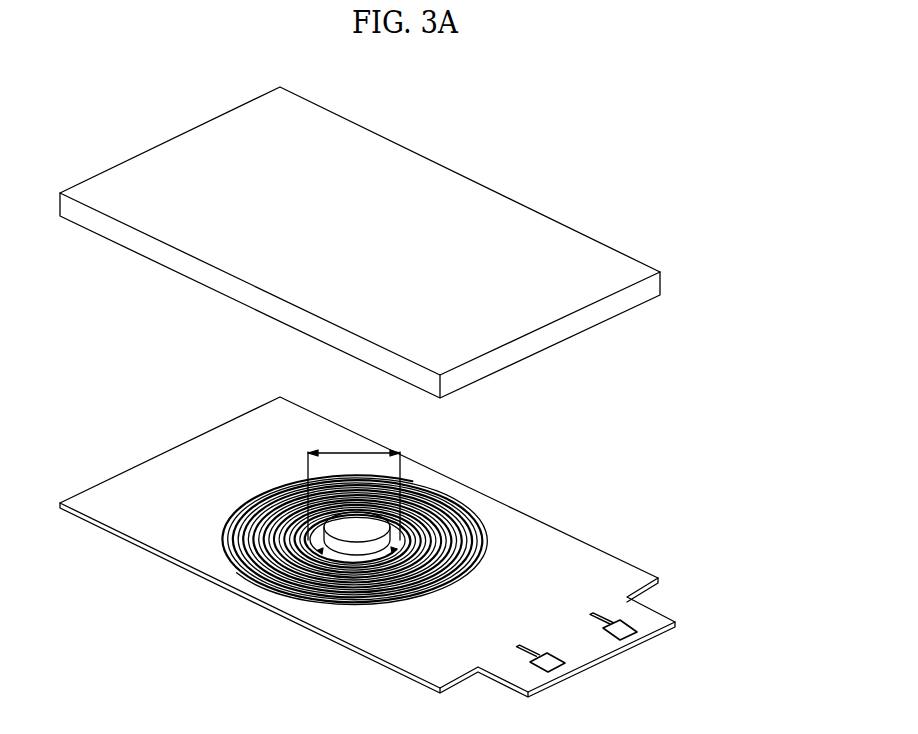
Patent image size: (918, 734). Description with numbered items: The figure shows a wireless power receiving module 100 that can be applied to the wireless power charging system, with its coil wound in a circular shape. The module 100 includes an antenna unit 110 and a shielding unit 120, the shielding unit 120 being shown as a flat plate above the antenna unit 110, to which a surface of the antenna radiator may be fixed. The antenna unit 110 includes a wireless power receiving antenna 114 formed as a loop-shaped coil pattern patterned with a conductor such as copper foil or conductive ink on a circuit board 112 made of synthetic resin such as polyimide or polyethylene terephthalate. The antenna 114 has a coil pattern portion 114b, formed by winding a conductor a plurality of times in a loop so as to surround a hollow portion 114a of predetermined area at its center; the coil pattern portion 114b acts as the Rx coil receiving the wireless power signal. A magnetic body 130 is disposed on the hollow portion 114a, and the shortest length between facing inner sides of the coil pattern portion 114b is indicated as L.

The wireless power receiving module 100 is at (703, 503).
The antenna unit 110 is at (421, 547).
The circuit board 112 is at (383, 640).
The wireless power receiving antenna 114 is at (327, 559).
The hollow portion 114a is at (316, 552).
The coil pattern portion 114b is at (325, 601).
The shielding unit 120 is at (590, 325).
The magnetic body 130 is at (367, 523).